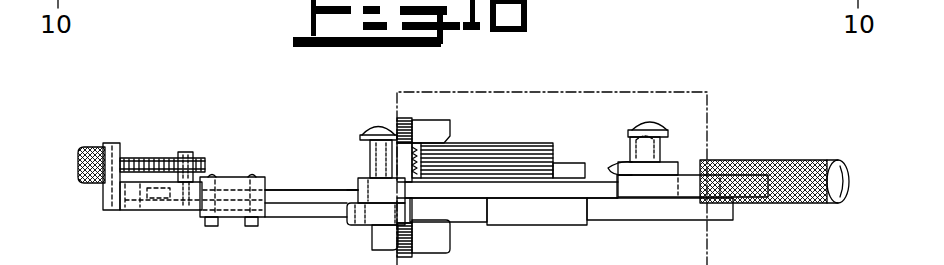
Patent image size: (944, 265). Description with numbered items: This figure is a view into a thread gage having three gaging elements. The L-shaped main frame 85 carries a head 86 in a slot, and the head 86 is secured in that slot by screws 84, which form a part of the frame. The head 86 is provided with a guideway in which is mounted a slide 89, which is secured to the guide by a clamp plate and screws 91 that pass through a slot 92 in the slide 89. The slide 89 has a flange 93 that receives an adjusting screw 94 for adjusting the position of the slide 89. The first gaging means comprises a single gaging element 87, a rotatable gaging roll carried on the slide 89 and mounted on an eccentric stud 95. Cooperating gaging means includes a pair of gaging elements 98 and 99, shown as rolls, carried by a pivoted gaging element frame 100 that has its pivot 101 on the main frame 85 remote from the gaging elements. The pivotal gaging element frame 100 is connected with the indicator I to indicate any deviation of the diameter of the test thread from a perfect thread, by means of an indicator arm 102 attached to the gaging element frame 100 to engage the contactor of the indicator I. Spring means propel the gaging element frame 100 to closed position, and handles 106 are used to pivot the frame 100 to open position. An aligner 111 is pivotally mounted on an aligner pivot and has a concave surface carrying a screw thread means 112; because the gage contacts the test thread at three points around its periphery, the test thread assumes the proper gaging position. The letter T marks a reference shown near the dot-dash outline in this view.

The screws 84 is at (206, 224).
The main frame 85 is at (282, 212).
The head 86 is at (150, 192).
The gaging element 87 is at (364, 130).
The slide 89 is at (313, 190).
The screws 91 is at (214, 177).
The slot 92 is at (348, 197).
The flange 93 is at (186, 152).
The adjusting screw 94 is at (137, 157).
The eccentric stud 95 is at (366, 152).
The gaging element 98 is at (666, 137).
The gaging element 99 is at (657, 126).
The gaging element frame 100 is at (752, 197).
The pivot 101 is at (625, 160).
The indicator arm 102 is at (528, 218).
The handles 106 is at (615, 160).
The aligner 111 is at (478, 140).
The screw thread means 112 is at (500, 140).
The indicator I is at (460, 238).
The table line T is at (712, 95).